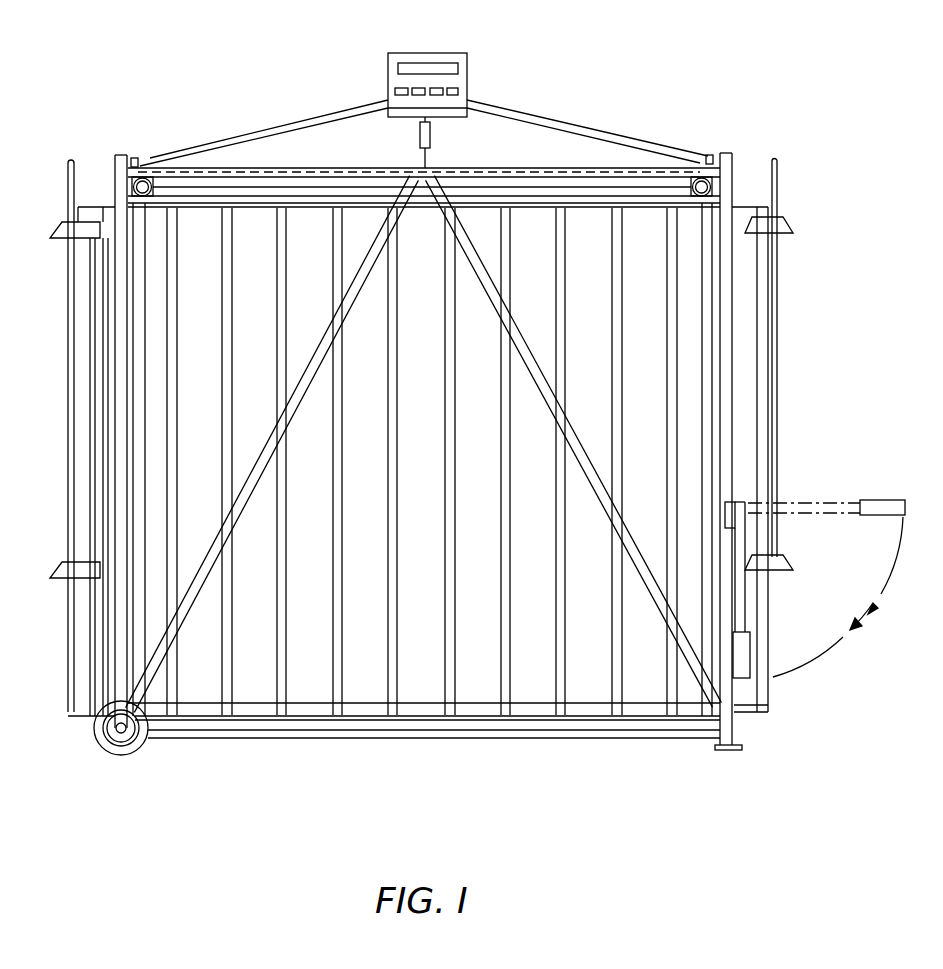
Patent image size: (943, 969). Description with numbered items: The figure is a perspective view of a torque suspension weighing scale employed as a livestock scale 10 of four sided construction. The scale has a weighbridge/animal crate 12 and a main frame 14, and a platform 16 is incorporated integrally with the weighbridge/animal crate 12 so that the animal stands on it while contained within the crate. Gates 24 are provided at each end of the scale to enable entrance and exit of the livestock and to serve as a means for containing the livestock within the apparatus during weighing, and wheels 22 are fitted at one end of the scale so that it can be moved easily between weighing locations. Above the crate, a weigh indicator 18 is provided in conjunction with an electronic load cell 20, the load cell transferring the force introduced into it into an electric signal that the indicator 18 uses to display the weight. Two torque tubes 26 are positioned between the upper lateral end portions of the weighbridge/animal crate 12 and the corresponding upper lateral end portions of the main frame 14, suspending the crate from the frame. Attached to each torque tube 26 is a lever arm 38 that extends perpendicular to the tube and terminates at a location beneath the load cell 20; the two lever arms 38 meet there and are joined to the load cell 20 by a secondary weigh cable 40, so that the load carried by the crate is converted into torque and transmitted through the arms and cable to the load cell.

The livestock scale 10 is at (547, 147).
The weighbridge/animal crate 12 is at (240, 197).
The main frame 14 is at (287, 125).
The platform 16 is at (425, 706).
The weigh indicator 18 is at (463, 53).
The electronic load cell 20 is at (430, 137).
The wheels 22 is at (140, 742).
The gates 24 is at (70, 385).
The torque tubes 26 is at (143, 177).
The lever arm 38 is at (597, 178).
The secondary weigh cable 40 is at (422, 157).